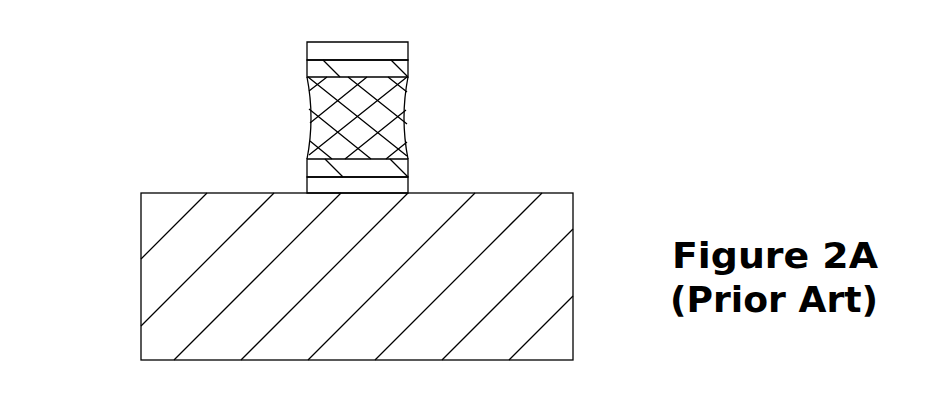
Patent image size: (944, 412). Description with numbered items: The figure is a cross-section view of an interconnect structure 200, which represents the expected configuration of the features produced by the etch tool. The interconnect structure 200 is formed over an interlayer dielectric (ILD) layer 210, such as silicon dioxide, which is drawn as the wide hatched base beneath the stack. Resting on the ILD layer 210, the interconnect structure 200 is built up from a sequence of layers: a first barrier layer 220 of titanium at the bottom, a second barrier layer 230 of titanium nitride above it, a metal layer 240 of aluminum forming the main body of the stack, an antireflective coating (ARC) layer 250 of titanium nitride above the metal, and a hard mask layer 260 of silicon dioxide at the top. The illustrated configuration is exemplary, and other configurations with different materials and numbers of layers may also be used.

The interconnect structure 200 is at (85, 90).
The interlayer dielectric (ILD) layer 210 is at (157, 258).
The first barrier layer 220 is at (307, 188).
The second barrier layer 230 is at (408, 168).
The metal layer 240 is at (311, 128).
The antireflective coating (ARC) layer 250 is at (408, 68).
The hard mask layer 260 is at (308, 47).